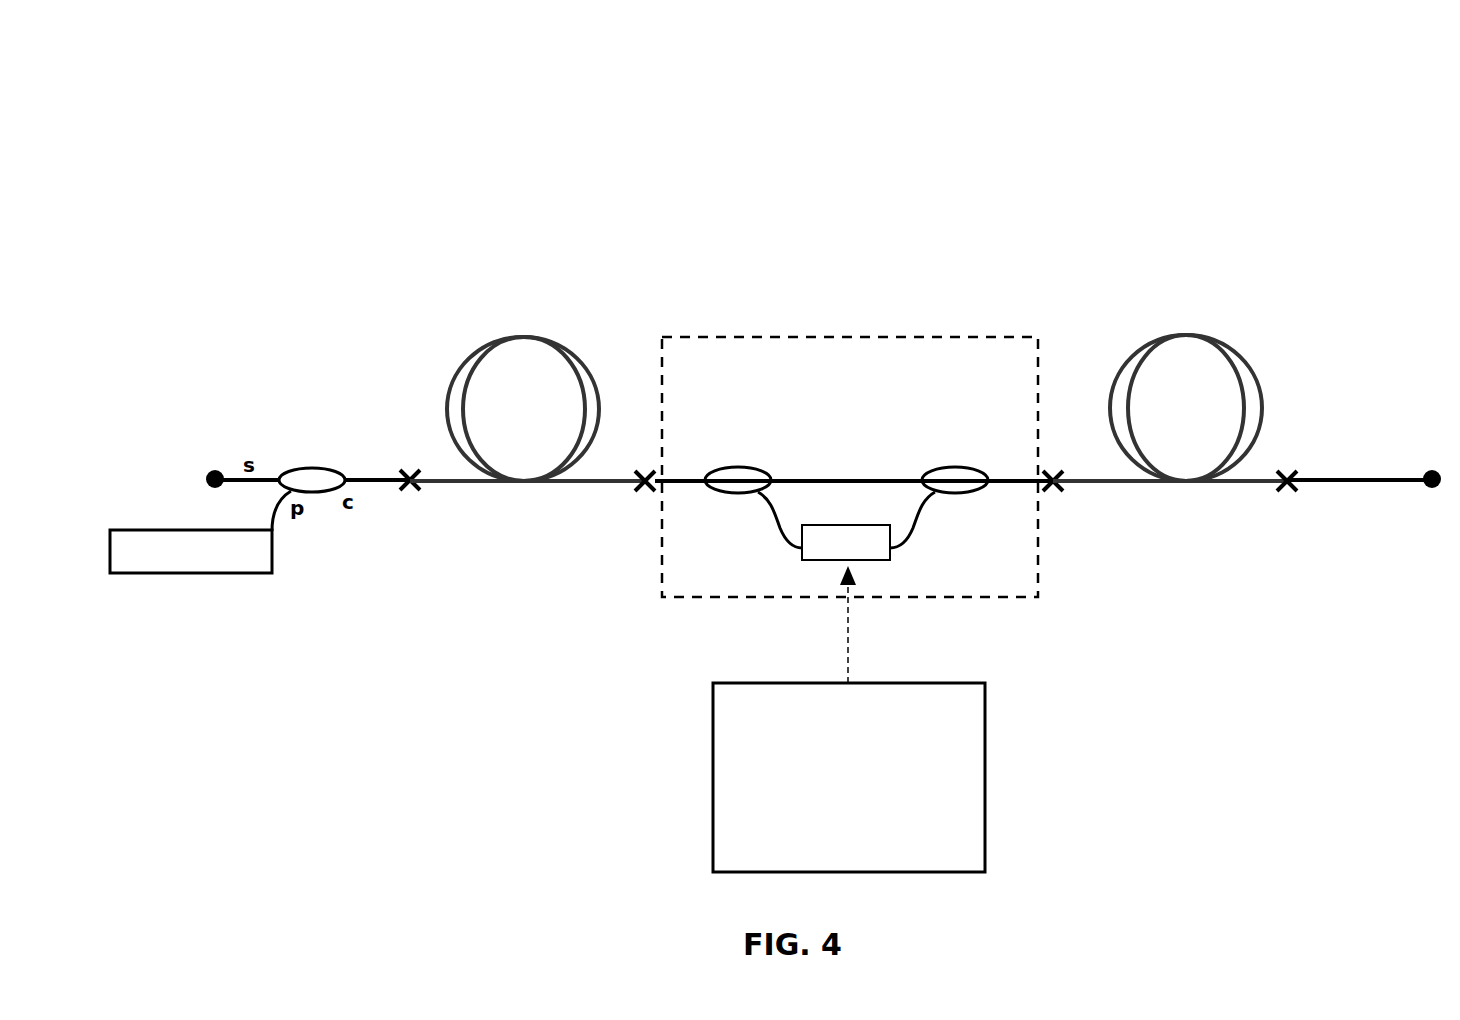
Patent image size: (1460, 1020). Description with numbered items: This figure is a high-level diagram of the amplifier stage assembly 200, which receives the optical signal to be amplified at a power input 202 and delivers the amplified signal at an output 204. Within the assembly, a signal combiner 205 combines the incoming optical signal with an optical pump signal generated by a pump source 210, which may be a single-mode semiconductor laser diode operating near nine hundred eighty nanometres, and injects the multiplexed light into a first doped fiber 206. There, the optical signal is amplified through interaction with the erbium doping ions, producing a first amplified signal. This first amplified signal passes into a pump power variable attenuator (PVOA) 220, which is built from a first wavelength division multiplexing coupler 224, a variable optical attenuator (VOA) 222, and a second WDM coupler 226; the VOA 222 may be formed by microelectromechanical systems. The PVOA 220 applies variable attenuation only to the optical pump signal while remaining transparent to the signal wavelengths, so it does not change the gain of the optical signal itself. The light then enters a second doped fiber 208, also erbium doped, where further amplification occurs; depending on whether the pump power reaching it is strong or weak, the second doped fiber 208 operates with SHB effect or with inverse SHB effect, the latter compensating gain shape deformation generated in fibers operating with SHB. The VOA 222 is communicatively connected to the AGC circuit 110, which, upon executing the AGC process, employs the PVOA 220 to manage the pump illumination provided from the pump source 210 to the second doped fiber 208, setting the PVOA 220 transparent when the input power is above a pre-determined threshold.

The amplifier stage assembly 200 is at (313, 136).
The power input 202 is at (213, 468).
The output port 204 is at (1429, 470).
The signal combiner 205 is at (311, 467).
The first doped fiber 206 is at (523, 335).
The second doped fiber 208 is at (1186, 333).
The pump source 210 is at (200, 532).
The pump power variable attenuator (PVOA) 220 is at (839, 333).
The variable optical attenuator (VOA) 222 is at (892, 552).
The first wavelength division multiplexing (WDM) coupler 224 is at (734, 467).
The second WDM 226 is at (961, 467).
The AGC circuit 110 is at (983, 698).